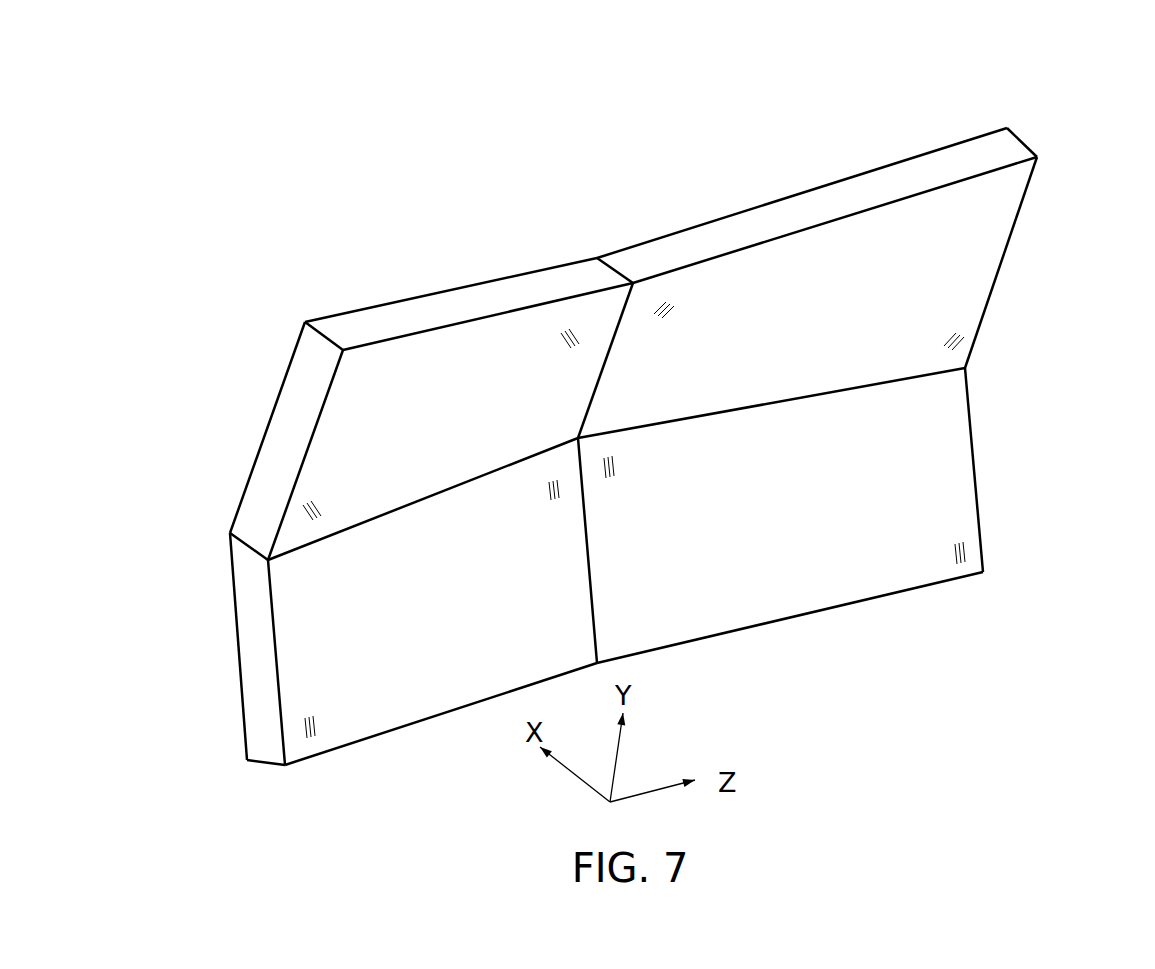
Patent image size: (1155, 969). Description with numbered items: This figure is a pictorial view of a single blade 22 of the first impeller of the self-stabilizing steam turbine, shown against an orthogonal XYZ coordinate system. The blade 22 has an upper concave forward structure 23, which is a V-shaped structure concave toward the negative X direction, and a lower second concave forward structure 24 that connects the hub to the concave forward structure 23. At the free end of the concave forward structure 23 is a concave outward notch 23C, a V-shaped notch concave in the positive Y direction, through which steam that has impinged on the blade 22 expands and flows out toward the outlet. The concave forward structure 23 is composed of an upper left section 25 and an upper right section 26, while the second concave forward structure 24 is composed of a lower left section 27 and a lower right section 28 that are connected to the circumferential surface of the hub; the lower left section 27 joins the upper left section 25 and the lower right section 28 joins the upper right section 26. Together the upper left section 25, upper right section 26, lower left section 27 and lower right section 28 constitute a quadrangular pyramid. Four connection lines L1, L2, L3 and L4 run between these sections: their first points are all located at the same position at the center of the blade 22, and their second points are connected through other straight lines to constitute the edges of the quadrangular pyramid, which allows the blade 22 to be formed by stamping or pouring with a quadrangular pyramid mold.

The blade 22 is at (587, 42).
The concave forward structure 23 is at (199, 172).
The concave outward notch 23C is at (608, 247).
The second concave forward structure 24 is at (199, 242).
The upper left section 25 is at (295, 430).
The upper right section 26 is at (980, 280).
The lower left section 27 is at (257, 627).
The lower right section 28 is at (962, 482).
The connection line L1 is at (600, 378).
The connection line L2 is at (770, 407).
The connection line L3 is at (587, 572).
The connection line L4 is at (438, 493).